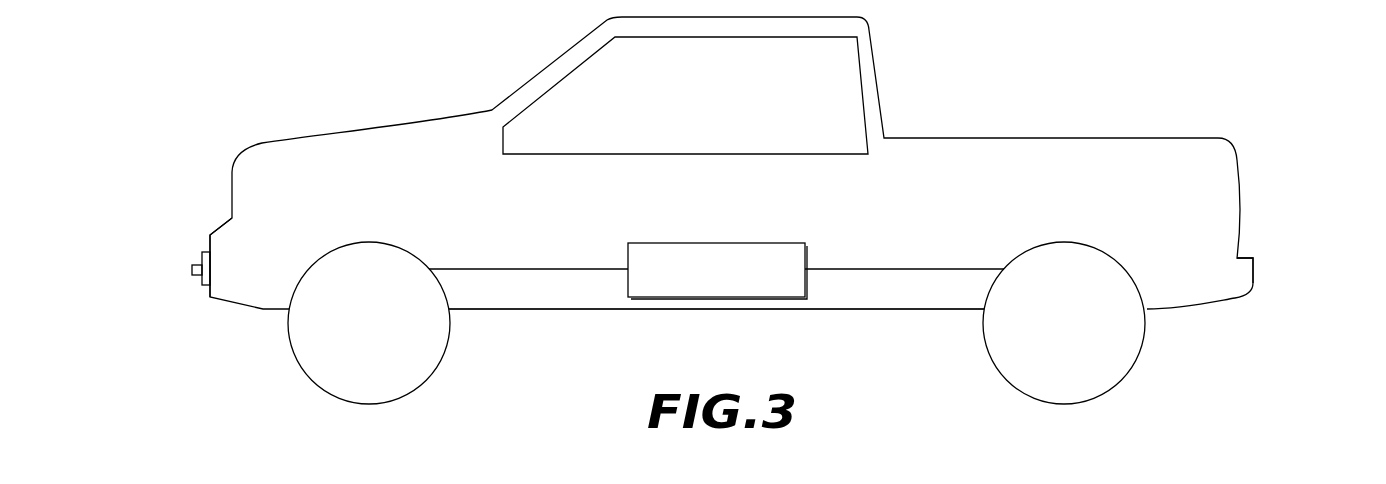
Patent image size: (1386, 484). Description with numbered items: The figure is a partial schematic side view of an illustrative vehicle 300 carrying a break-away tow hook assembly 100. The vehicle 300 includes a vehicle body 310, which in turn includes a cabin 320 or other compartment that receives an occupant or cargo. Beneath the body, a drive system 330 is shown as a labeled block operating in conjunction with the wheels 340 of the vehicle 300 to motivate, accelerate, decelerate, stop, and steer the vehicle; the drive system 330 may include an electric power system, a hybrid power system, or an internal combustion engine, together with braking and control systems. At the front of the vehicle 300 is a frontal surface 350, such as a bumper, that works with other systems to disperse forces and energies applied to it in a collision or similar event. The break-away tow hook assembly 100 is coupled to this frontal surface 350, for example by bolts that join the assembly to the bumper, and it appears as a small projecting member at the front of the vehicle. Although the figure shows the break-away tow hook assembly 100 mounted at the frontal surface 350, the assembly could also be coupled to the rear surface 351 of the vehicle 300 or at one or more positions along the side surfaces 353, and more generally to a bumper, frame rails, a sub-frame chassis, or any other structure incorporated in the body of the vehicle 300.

The break-away tow hook assembly 100 is at (190, 277).
The vehicle 300 is at (207, 80).
The vehicle body 310 is at (373, 152).
The cabin 320 is at (838, 92).
The drive system 330 is at (745, 243).
The wheels 340 is at (447, 347).
The frontal surface 350 is at (207, 234).
The rear surface 351 is at (1267, 273).
The side surfaces 353 is at (731, 333).